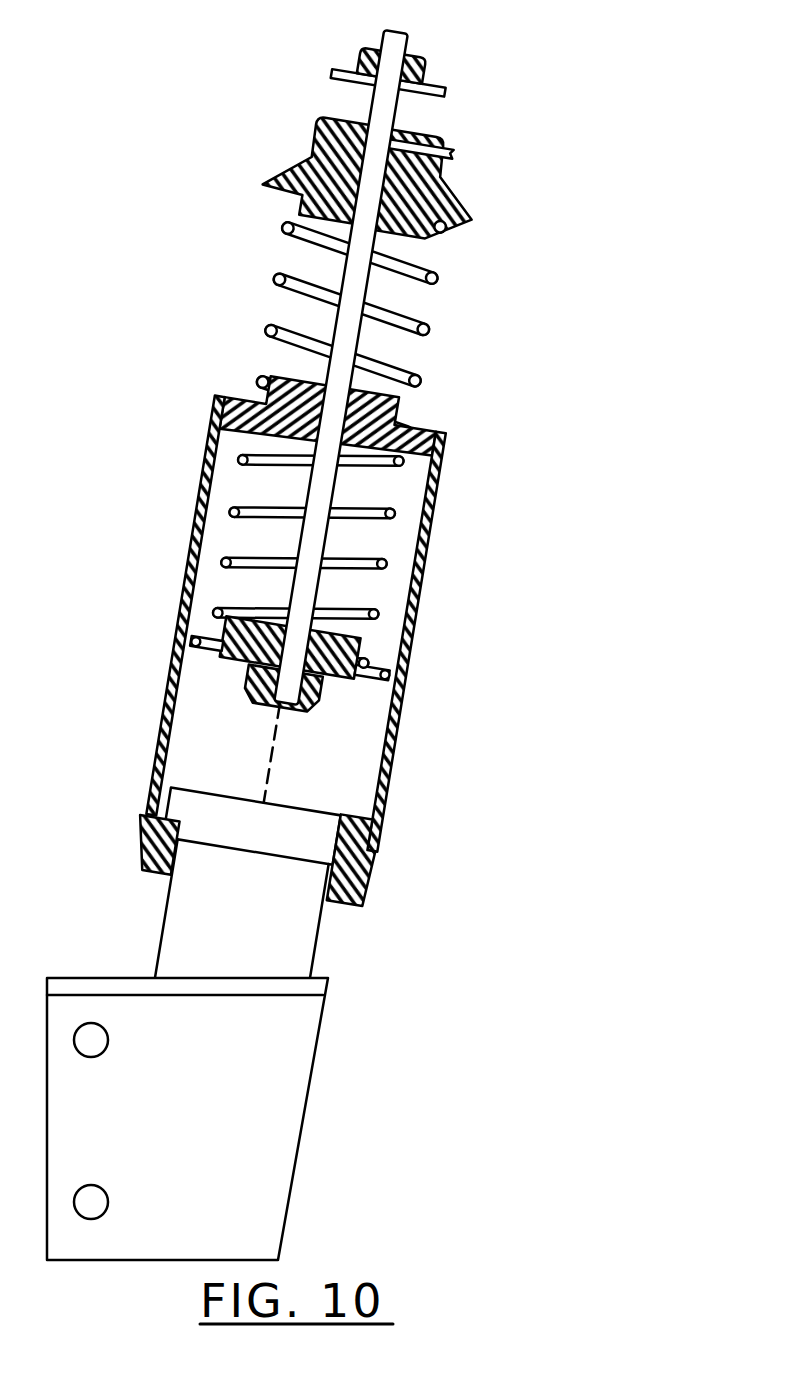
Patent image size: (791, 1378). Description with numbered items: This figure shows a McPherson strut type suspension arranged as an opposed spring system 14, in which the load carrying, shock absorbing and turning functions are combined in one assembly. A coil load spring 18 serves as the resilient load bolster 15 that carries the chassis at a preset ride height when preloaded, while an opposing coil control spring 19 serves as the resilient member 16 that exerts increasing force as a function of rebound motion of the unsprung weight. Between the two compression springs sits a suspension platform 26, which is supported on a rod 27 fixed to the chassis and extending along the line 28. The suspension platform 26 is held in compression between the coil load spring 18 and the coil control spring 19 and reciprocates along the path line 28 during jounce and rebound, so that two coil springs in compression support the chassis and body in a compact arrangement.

The opposed spring system 14 is at (532, 165).
The resilient load bolster 15 is at (273, 280).
The coil load spring 18 is at (452, 279).
The suspension platform 26 is at (213, 413).
The rod 27 is at (322, 483).
The coil control spring 19 is at (398, 511).
The resilient member 16 is at (413, 558).
The line 28 is at (277, 743).